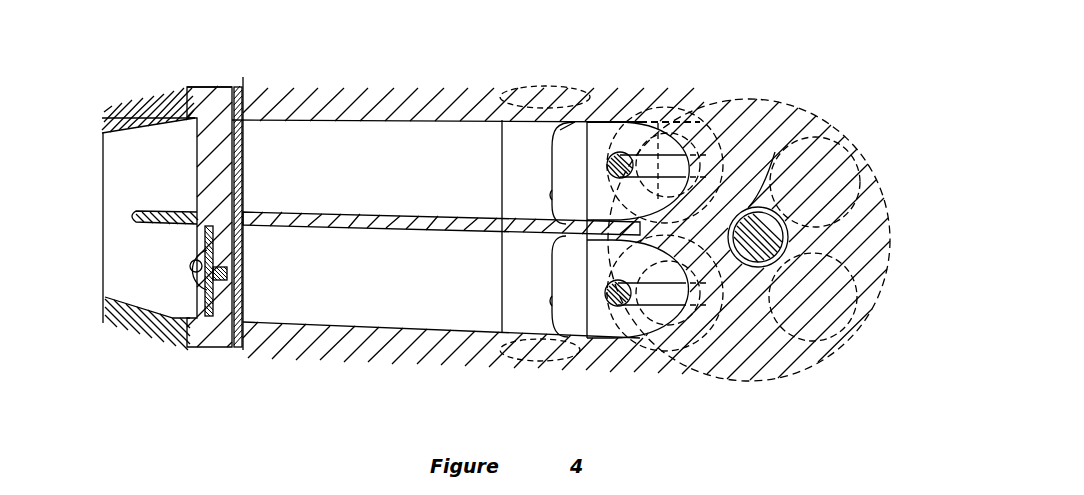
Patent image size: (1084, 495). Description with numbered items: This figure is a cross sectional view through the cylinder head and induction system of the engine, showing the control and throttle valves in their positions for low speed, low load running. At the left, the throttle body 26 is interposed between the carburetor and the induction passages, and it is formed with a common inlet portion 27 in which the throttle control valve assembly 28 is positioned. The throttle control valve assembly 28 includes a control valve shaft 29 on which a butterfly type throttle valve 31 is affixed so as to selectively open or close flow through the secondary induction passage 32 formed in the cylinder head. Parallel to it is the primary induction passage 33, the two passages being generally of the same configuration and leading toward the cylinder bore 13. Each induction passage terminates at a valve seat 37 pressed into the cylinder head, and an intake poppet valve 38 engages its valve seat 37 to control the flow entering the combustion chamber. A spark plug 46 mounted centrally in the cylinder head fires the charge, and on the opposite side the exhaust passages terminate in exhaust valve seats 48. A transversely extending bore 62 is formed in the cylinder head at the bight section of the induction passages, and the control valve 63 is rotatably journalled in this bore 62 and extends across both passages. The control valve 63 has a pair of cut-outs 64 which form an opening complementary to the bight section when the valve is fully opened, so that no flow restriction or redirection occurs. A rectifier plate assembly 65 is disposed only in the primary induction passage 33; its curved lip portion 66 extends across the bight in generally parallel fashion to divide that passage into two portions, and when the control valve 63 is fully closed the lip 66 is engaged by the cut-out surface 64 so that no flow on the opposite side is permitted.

The cylinder bore 13 is at (832, 128).
The throttle body 26 is at (150, 102).
The common inlet portion 27 is at (131, 297).
The throttle control valve assembly 28 is at (188, 196).
The control valve shaft 29 is at (217, 87).
The throttle valve 31 is at (197, 238).
The secondary induction passage 32 is at (271, 320).
The primary induction passage 33 is at (253, 121).
The valve seat 37 is at (727, 100).
The intake poppet valve 38 is at (607, 150).
The spark plug 46 is at (752, 207).
The exhaust valve seat 48 is at (857, 182).
The transversely extending bore 62 is at (500, 93).
The control valve 63 is at (494, 299).
The cut-out 64 is at (552, 194).
The rectifier plate assembly 65 is at (623, 112).
The curved lip portion 66 is at (572, 145).